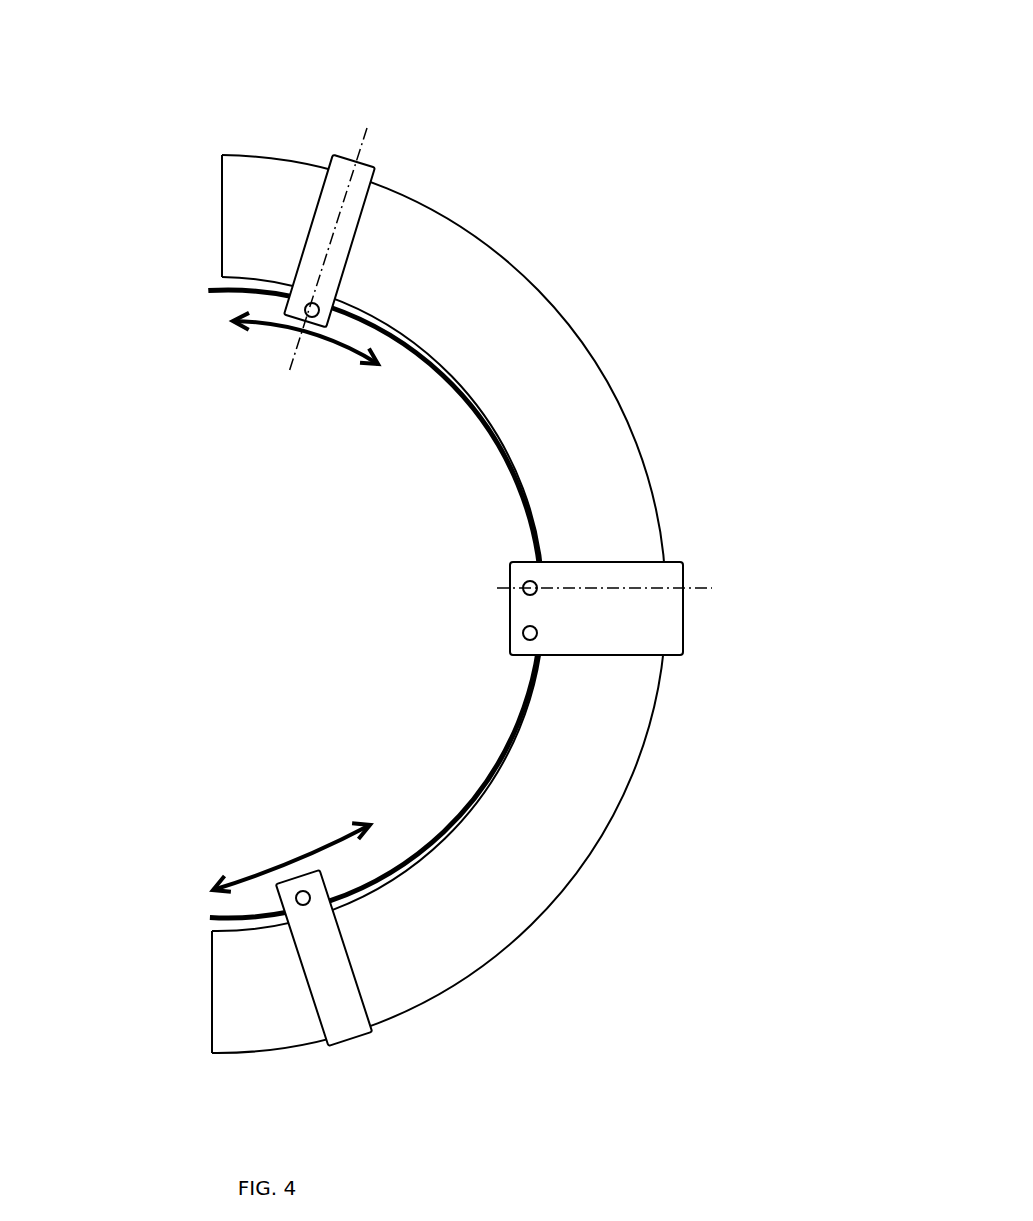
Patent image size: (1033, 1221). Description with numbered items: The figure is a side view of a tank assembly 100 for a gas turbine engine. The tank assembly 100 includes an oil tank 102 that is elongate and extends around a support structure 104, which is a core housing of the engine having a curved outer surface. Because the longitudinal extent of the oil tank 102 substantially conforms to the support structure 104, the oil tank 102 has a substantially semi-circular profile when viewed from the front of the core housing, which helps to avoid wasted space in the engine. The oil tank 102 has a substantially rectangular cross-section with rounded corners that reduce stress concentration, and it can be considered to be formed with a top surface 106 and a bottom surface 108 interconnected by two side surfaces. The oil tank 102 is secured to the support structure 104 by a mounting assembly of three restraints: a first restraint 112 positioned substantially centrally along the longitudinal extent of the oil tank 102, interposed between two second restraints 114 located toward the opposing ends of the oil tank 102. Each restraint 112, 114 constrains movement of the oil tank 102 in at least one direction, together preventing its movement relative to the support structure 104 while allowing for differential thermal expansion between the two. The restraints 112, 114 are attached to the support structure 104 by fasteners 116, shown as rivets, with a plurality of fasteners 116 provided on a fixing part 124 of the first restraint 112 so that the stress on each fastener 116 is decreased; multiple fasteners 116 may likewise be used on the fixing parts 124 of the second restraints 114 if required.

The tank assembly 100 is at (461, 606).
The oil tank 102 is at (544, 604).
The support structure 104 is at (362, 596).
The top surface 106 is at (607, 372).
The bottom surface 108 is at (483, 406).
The first restraint 112 is at (683, 630).
The second restraint 114 is at (373, 168).
The fastener 116 is at (310, 313).
The fixing part 124 is at (287, 313).